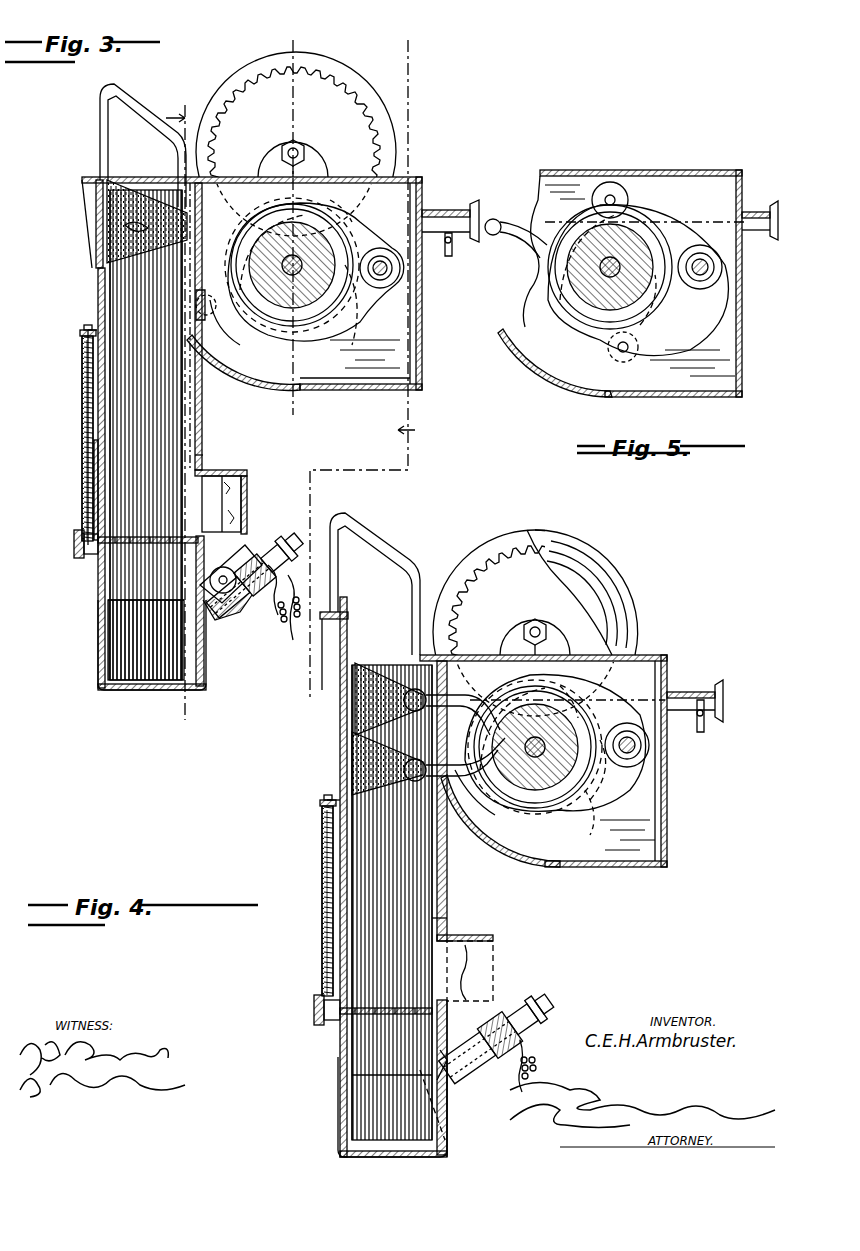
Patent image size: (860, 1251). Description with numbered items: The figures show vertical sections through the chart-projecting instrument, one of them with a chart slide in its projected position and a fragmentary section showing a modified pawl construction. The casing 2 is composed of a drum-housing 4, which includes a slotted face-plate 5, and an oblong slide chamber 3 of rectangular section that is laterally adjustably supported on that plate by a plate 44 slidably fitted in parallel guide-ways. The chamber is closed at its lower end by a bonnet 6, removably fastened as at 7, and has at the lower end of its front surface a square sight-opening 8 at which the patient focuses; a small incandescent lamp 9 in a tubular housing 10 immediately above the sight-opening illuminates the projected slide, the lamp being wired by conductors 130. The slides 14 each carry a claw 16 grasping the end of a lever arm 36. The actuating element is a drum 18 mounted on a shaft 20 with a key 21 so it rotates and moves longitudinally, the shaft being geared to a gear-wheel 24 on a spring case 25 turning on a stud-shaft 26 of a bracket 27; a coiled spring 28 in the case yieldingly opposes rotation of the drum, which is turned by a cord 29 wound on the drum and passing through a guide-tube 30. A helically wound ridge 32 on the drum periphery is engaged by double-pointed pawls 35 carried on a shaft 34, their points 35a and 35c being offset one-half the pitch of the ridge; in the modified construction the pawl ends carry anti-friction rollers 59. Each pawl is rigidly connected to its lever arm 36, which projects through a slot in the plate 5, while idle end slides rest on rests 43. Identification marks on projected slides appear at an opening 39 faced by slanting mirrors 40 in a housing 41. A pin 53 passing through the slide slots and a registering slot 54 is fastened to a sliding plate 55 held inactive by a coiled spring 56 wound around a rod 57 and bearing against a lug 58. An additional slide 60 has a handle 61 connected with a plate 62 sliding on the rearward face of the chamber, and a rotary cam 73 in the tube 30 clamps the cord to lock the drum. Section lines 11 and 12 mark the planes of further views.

In FIG. 3, the casing 2 is at (160, 293).
In FIG. 4, the casing 2 is at (345, 877).
In FIG. 3, the slide chamber 3 is at (203, 441).
In FIG. 4, the slide chamber 3 is at (447, 850).
In FIG. 3, the drum-housing 4 is at (424, 298).
In FIG. 5, the drum-housing 4 is at (745, 357).
In FIG. 4, the drum-housing 4 is at (543, 761).
In FIG. 3, the slotted face-plate 5 is at (212, 340).
In FIG. 3, the bonnet 6 is at (432, 365).
In FIG. 4, the bonnet 6 is at (340, 1108).
In FIG. 3, the fastening 7 is at (222, 611).
In FIG. 3, the sight-opening 8 is at (212, 661).
In FIG. 4, the sight-opening 8 is at (448, 1111).
In FIG. 3, the incandescent lamp 9 is at (233, 590).
In FIG. 3, the tubular housing 10 is at (273, 580).
In FIG. 4, the tubular housing 10 is at (532, 1062).
In FIG. 3, the section line 11- 11 is at (356, 376).
In FIG. 3, the spray nozzle / section line 12- 12 is at (289, 545).
In FIG. 4, the spray nozzle / section line 12- 12 is at (538, 1000).
In FIG. 3, the slides 14 is at (115, 426).
In FIG. 4, the slides 14 is at (385, 936).
In FIG. 3, the claw 16 is at (120, 243).
In FIG. 4, the claw 16 is at (373, 698).
In FIG. 3, the drum 18 is at (372, 195).
In FIG. 5, the drum 18 is at (585, 232).
In FIG. 4, the drum 18 is at (528, 705).
In FIG. 3, the shaft 20 is at (290, 300).
In FIG. 5, the shaft 20 is at (595, 290).
In FIG. 4, the shaft 20 is at (495, 799).
In FIG. 3, the key or feather 21 is at (302, 262).
In FIG. 3, the gear-wheel 24 is at (337, 110).
In FIG. 4, the gear-wheel 24 is at (607, 632).
In FIG. 3, the spring case 25 is at (368, 82).
In FIG. 4, the spring case 25 is at (583, 541).
In FIG. 3, the stud-shaft 26 is at (282, 153).
In FIG. 4, the stud-shaft 26 is at (549, 633).
In FIG. 3, the bracket 27 is at (300, 128).
In FIG. 4, the bracket 27 is at (545, 600).
In FIG. 4, the coiled spring 28 is at (600, 607).
In FIG. 3, the cord 29 is at (456, 212).
In FIG. 5, the cord 29 is at (772, 228).
In FIG. 4, the cord 29 is at (710, 714).
In FIG. 3, the guide-tube 30 is at (440, 210).
In FIG. 5, the guide-tube 30 is at (745, 210).
In FIG. 4, the guide-tube 30 is at (718, 697).
In FIG. 3, the helically wound ridge 32 is at (256, 250).
In FIG. 3, the shaft 34 is at (402, 268).
In FIG. 5, the shaft 34 is at (708, 270).
In FIG. 4, the shaft 34 is at (640, 753).
In FIG. 3, the double-pointed pallets or pawls 35 is at (358, 252).
In FIG. 5, the double-pointed pallets or pawls 35 is at (660, 210).
In FIG. 4, the double-pointed pallets or pawls 35 is at (607, 697).
In FIG. 3, the pawl point 35a is at (346, 201).
In FIG. 4, the pawl point 35a is at (561, 692).
In FIG. 3, the pawl point 35c is at (336, 321).
In FIG. 4, the pawl point 35c is at (599, 820).
In FIG. 3, the lever arm 36 is at (362, 328).
In FIG. 5, the lever arm 36 is at (577, 333).
In FIG. 4, the lever arm 36 is at (449, 690).
In FIG. 3, the opening 39 is at (249, 473).
In FIG. 3, the slanting mirrors 40 is at (232, 493).
In FIG. 3, the mirror housing 41 is at (250, 483).
In FIG. 4, the mirror housing 41 is at (492, 945).
In FIG. 4, the rests 43 is at (418, 663).
In FIG. 3, the plate 44 is at (180, 306).
In FIG. 4, the plate 44 is at (375, 792).
In FIG. 3, the pin 53 is at (215, 540).
In FIG. 4, the pin 53 is at (360, 1016).
In FIG. 3, the slot 54 is at (97, 459).
In FIG. 3, the plate 55 is at (97, 571).
In FIG. 4, the plate 55 is at (326, 1022).
In FIG. 3, the coiled spring 56 is at (82, 367).
In FIG. 4, the coiled spring 56 is at (325, 912).
In FIG. 3, the rod 57 is at (85, 396).
In FIG. 4, the rod 57 is at (325, 940).
In FIG. 3, the lug 58 is at (80, 337).
In FIG. 4, the lug 58 is at (320, 816).
In FIG. 5, the anti-friction rollers 59 is at (612, 188).
In FIG. 3, the slide 60 is at (203, 459).
In FIG. 4, the slide 60 is at (438, 918).
In FIG. 3, the handle 61 is at (121, 95).
In FIG. 4, the handle 61 is at (378, 548).
In FIG. 3, the plate 62 is at (95, 220).
In FIG. 4, the plate 62 is at (333, 673).
In FIG. 3, the rotary cam 73 is at (454, 243).
In FIG. 4, the rotary cam 73 is at (704, 732).
In FIG. 3, the conductors 130 is at (285, 622).